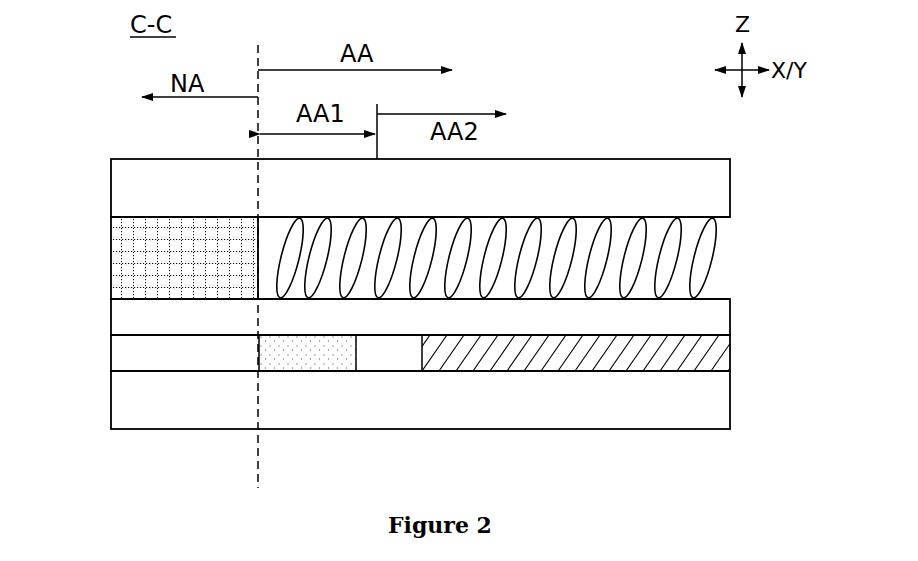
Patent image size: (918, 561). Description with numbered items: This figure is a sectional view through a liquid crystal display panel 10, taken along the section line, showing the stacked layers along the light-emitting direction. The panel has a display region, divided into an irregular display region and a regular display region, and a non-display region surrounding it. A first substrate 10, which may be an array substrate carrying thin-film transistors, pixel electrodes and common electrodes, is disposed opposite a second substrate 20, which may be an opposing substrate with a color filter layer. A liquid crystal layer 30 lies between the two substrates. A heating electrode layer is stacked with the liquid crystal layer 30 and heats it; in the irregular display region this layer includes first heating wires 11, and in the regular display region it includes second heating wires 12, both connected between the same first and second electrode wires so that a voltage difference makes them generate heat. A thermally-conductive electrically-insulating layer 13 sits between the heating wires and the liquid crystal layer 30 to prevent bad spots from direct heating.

The first substrate 10 is at (127, 408).
The first heating wire 11 is at (298, 373).
The second heating wire 12 is at (710, 356).
The thermally-conductive electrically-insulating layer 13 is at (710, 321).
The second substrate 20 is at (125, 193).
The liquid crystal layer 30 is at (731, 260).